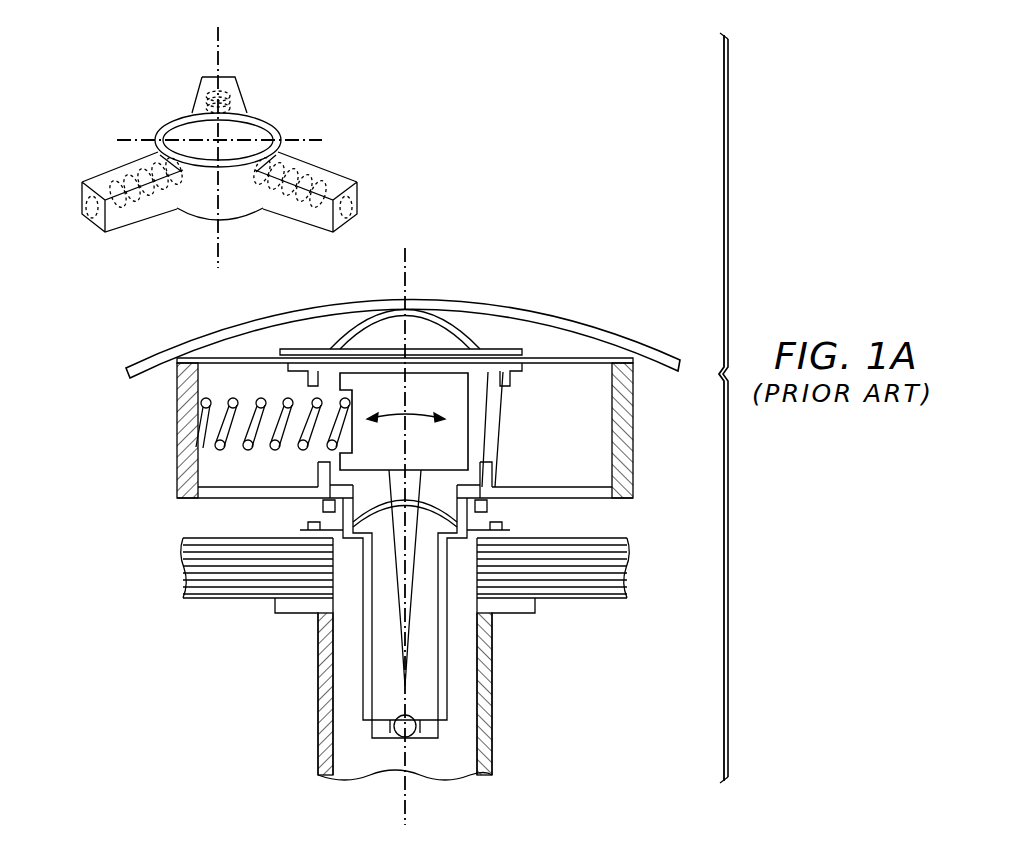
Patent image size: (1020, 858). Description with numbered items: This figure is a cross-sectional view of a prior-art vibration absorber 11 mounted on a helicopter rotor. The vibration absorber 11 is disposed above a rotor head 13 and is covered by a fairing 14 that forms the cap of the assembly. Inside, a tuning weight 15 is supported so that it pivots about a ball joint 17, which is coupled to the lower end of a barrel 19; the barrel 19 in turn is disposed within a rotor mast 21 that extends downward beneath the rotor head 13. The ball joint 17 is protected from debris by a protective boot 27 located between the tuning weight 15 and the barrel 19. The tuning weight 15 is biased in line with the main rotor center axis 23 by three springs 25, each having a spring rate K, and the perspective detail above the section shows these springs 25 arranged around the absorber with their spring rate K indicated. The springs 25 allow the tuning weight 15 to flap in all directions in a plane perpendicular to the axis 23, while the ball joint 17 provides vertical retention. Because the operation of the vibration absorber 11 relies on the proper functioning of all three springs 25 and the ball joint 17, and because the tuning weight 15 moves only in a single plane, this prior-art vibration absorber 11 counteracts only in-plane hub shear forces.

The vibration absorber 11 is at (560, 296).
The rotor head 13 is at (222, 602).
The fairing 14 is at (200, 338).
The tuning weight 15 is at (452, 445).
The ball joint 17 is at (410, 738).
The barrel 19 is at (452, 680).
The rotor mast 21 is at (318, 732).
The main rotor center axis 23 is at (215, 42).
The springs 25 is at (258, 435).
The protective boot 27 is at (368, 503).
The spring rate K is at (207, 90).